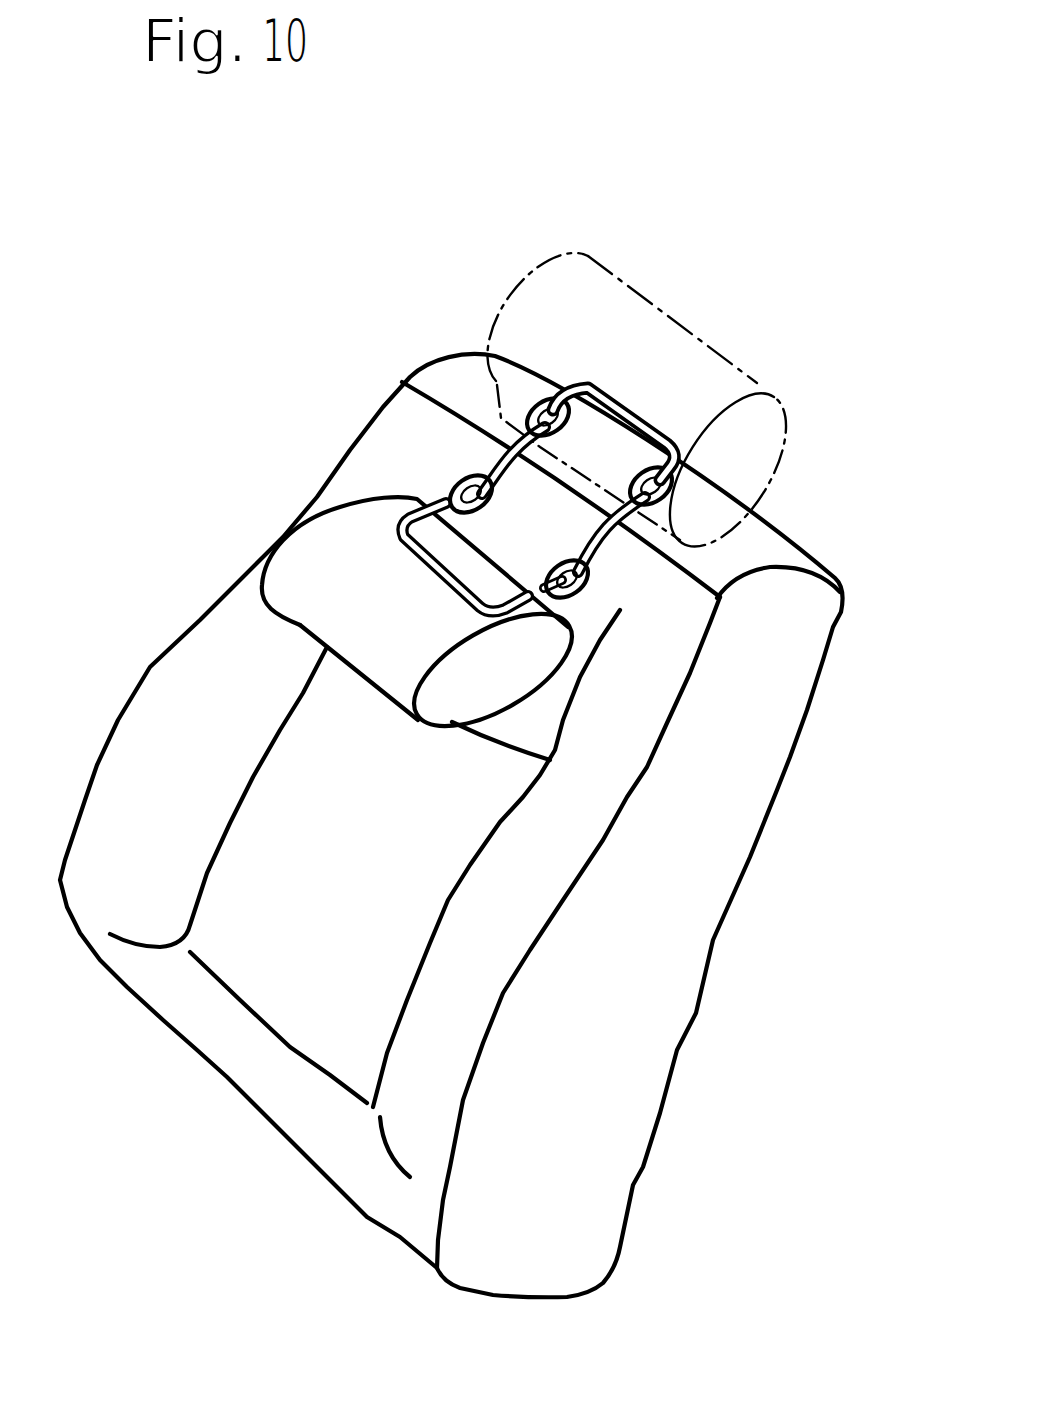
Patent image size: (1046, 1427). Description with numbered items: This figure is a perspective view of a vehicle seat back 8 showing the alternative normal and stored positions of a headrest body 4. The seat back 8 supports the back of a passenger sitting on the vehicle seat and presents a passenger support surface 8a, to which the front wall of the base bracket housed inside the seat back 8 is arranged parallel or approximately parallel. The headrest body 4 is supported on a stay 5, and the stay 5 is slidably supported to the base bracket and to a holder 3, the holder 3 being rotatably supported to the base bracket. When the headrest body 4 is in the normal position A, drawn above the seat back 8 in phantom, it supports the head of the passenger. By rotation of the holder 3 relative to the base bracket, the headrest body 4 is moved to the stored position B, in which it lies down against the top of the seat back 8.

The holder 3 is at (677, 510).
The headrest body 4 is at (348, 555).
The stay 5 is at (630, 423).
The seat back 8 is at (710, 847).
The passenger support surface 8a is at (443, 805).
The normal position A is at (630, 288).
The stored position B is at (302, 627).